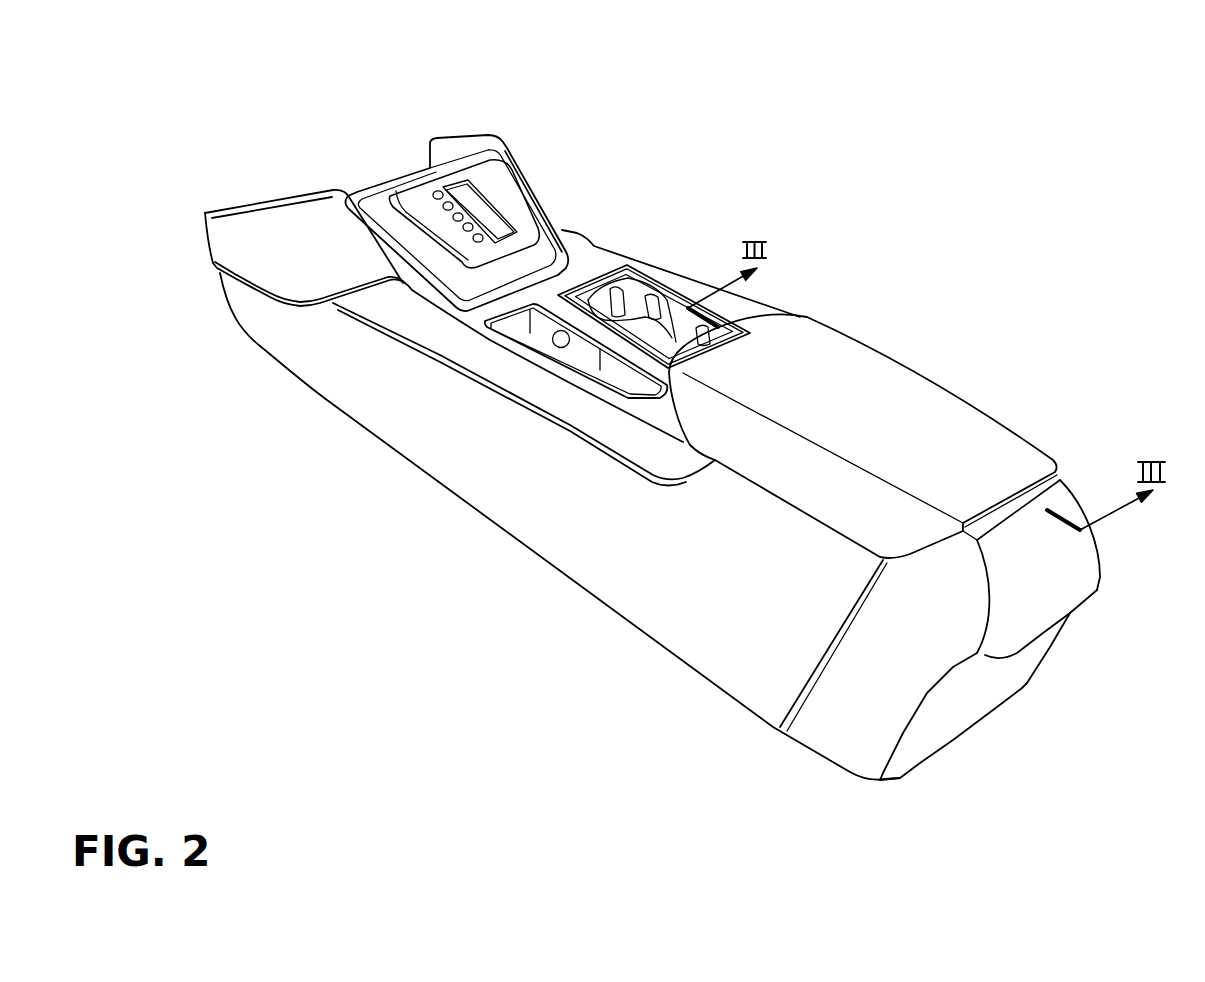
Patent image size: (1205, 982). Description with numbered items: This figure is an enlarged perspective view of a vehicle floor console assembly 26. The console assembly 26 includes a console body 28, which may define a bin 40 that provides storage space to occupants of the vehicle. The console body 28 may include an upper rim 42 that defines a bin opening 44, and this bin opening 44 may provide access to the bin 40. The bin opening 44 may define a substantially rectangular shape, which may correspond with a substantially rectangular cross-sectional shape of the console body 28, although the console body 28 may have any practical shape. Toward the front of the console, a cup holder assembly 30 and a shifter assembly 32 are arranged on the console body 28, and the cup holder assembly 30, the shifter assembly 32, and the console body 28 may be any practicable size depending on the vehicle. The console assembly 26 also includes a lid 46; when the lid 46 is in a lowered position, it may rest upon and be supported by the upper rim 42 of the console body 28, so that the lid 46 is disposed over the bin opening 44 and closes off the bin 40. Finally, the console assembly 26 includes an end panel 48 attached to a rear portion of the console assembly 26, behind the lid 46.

The console assembly 26 is at (246, 122).
The console body 28 is at (617, 527).
The cup holder assembly 30 is at (661, 255).
The shifter assembly 32 is at (517, 133).
The bin 40 is at (783, 547).
The upper rim 42 is at (770, 485).
The bin opening 44 is at (863, 490).
The lid 46 is at (1025, 440).
The end panel 48 is at (1090, 590).